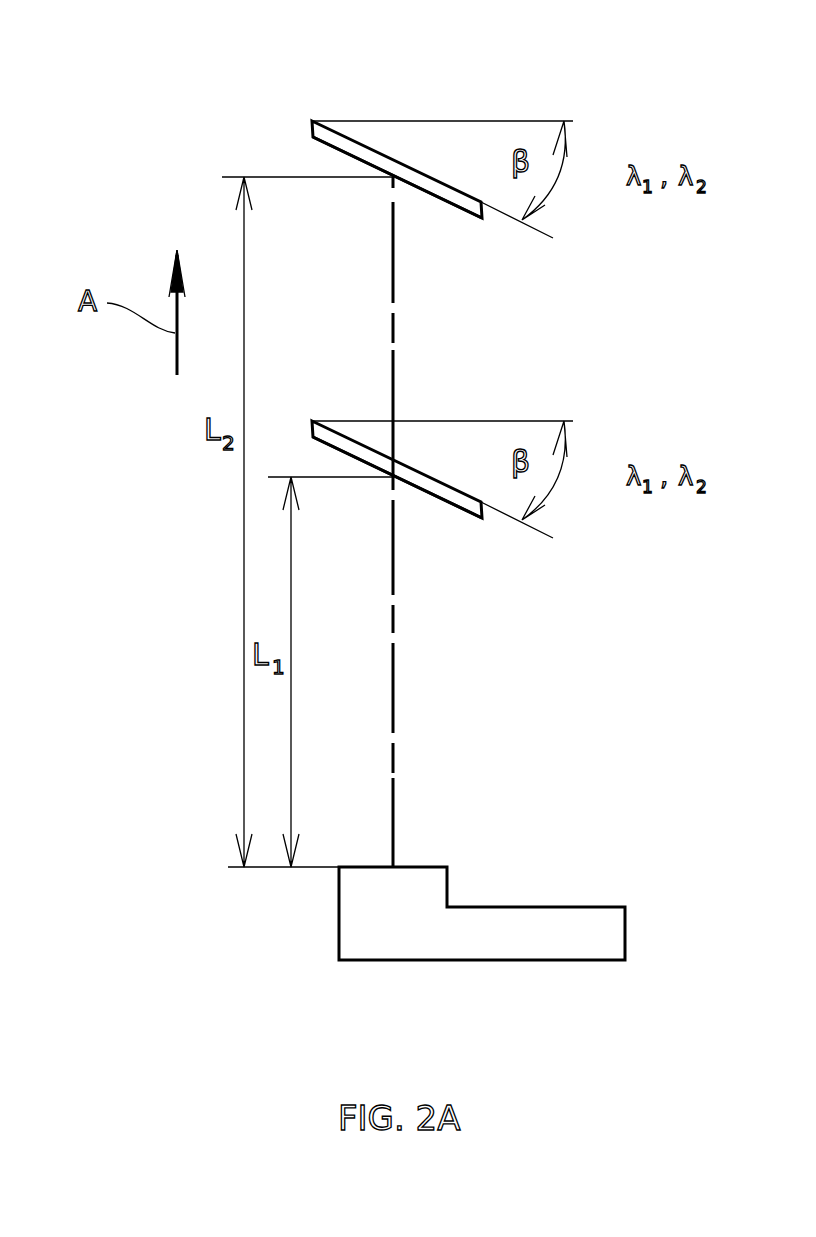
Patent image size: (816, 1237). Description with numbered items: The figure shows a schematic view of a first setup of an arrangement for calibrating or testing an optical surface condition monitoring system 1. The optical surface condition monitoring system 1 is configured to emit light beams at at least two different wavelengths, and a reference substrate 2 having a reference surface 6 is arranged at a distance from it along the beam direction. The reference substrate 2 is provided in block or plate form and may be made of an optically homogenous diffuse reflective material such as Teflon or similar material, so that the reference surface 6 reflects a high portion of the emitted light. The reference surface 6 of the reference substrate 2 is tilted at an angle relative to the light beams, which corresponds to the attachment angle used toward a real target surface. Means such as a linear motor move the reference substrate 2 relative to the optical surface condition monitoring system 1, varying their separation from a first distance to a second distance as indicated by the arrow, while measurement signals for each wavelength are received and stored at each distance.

The optical surface condition monitoring system 1 is at (522, 923).
The reference substrate 2 is at (463, 205).
The reference surface 6 is at (407, 185).